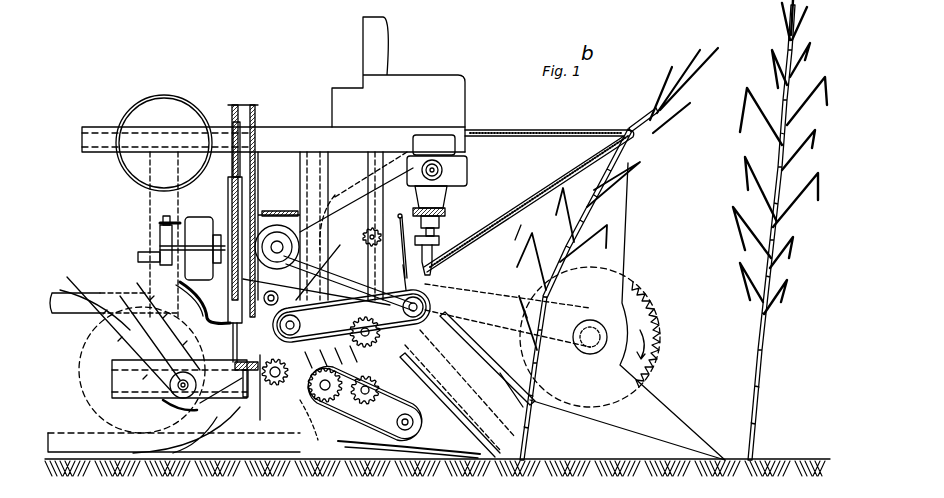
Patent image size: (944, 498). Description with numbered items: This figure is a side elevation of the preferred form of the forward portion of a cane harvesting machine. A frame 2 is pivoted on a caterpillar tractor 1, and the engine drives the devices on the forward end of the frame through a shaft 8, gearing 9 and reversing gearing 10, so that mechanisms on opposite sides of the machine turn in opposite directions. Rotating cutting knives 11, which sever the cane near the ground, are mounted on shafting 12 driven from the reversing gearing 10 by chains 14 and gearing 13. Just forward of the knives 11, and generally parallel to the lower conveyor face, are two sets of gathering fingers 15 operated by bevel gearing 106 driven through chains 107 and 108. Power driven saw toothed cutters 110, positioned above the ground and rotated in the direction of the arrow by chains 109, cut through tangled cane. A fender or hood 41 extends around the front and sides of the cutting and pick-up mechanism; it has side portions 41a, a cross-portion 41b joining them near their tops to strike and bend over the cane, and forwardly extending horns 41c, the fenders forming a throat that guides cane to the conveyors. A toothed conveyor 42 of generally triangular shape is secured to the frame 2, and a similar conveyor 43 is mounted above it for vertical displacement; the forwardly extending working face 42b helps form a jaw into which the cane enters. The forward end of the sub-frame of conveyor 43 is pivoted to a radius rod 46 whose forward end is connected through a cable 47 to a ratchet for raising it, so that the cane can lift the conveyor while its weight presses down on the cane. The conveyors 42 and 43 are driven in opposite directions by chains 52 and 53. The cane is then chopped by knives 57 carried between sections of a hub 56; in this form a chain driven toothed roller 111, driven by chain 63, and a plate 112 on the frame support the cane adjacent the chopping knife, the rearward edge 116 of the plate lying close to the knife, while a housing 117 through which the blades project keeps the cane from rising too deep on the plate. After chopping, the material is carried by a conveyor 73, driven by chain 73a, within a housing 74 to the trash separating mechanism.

The caterpillar tractor 1 is at (60, 290).
The frame 2 is at (289, 132).
The shaft 8 is at (158, 255).
The gearing 9 is at (200, 220).
The reversing gearing 10 is at (279, 238).
The rotating cutting knives 11 is at (450, 405).
The shafting 12 is at (433, 262).
The gearing 13 is at (468, 170).
The chains 14 is at (418, 145).
The gathering fingers 15 is at (470, 432).
The fender or hood 41 is at (560, 128).
The side portions 41a is at (625, 247).
The cross-portion 41b is at (521, 230).
The horns 41c is at (683, 425).
The toothed conveyor 42 is at (350, 440).
The working face 42b is at (392, 451).
The conveyor 43 is at (351, 329).
The radius rod 46 is at (402, 278).
The cable 47 is at (406, 239).
The chain 52 is at (280, 390).
The chain 53 is at (507, 286).
The hub 56 is at (238, 302).
The knives 57 is at (232, 142).
The chain 63 is at (306, 420).
The conveyor 73 is at (123, 298).
The chain 73a is at (186, 427).
The housing 74 is at (165, 290).
The bevel gearing 106 is at (366, 232).
The chain 107 is at (262, 296).
The chain 108 is at (333, 190).
The chains 109 is at (488, 292).
The saw toothed cutters 110 is at (636, 320).
The toothed roller 111 is at (262, 420).
The plate 112 is at (258, 402).
The rearward edge 116 is at (198, 385).
The housing 117 is at (225, 322).